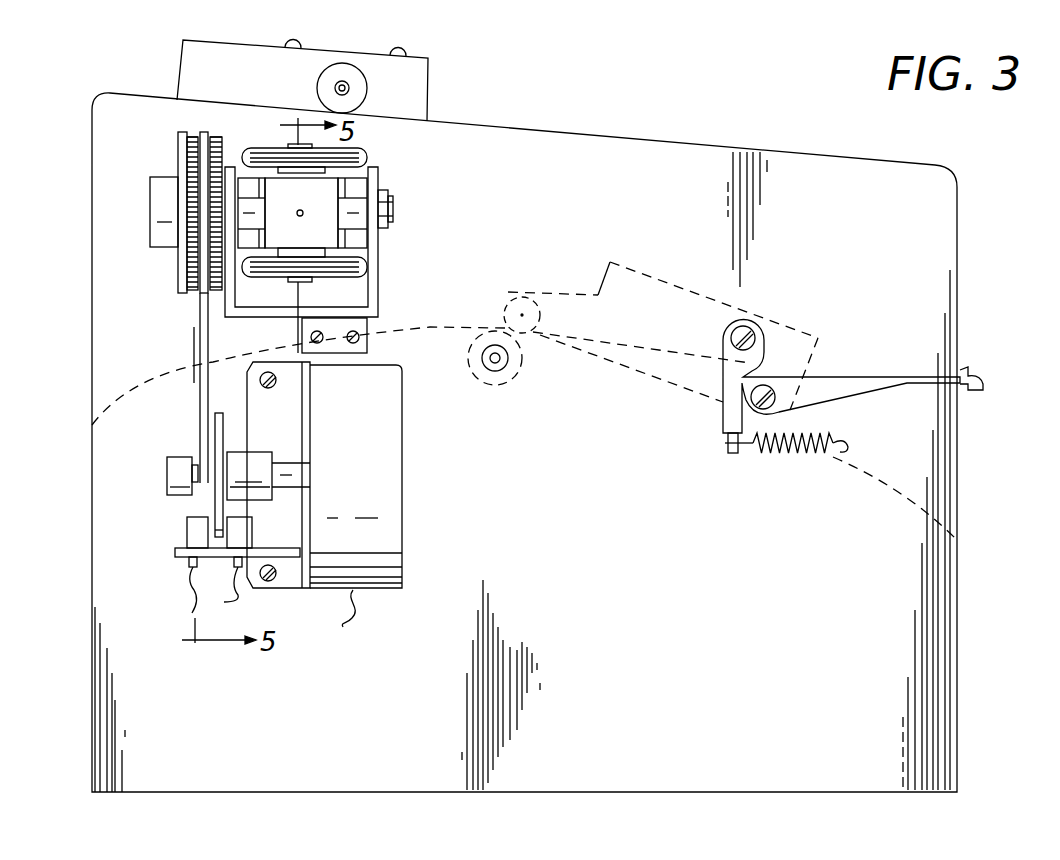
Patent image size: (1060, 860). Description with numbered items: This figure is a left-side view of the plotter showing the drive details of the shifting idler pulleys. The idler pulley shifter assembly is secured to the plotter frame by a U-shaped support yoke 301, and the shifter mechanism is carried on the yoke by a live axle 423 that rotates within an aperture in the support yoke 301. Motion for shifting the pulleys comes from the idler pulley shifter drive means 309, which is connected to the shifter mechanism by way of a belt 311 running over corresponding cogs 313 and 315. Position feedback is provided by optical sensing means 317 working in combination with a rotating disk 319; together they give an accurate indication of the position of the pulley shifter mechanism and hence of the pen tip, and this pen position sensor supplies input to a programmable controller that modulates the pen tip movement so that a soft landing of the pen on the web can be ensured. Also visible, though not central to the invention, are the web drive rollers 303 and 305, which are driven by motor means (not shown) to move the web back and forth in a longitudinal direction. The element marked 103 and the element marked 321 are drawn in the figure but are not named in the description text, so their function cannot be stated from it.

The tape web path 103 is at (160, 377).
The U-shaped support yoke 301 is at (378, 173).
The web drive roller 303 is at (525, 298).
The web drive roller 305 is at (509, 357).
The idler pulley shifter drive means 309 is at (392, 445).
The belt 311 is at (200, 410).
The cog 313 is at (179, 165).
The cog 315 is at (175, 460).
The optical sensing means 317 is at (183, 523).
The rotating disk 319 is at (214, 500).
The bearing block 321 is at (318, 232).
The live axle 423 is at (395, 207).